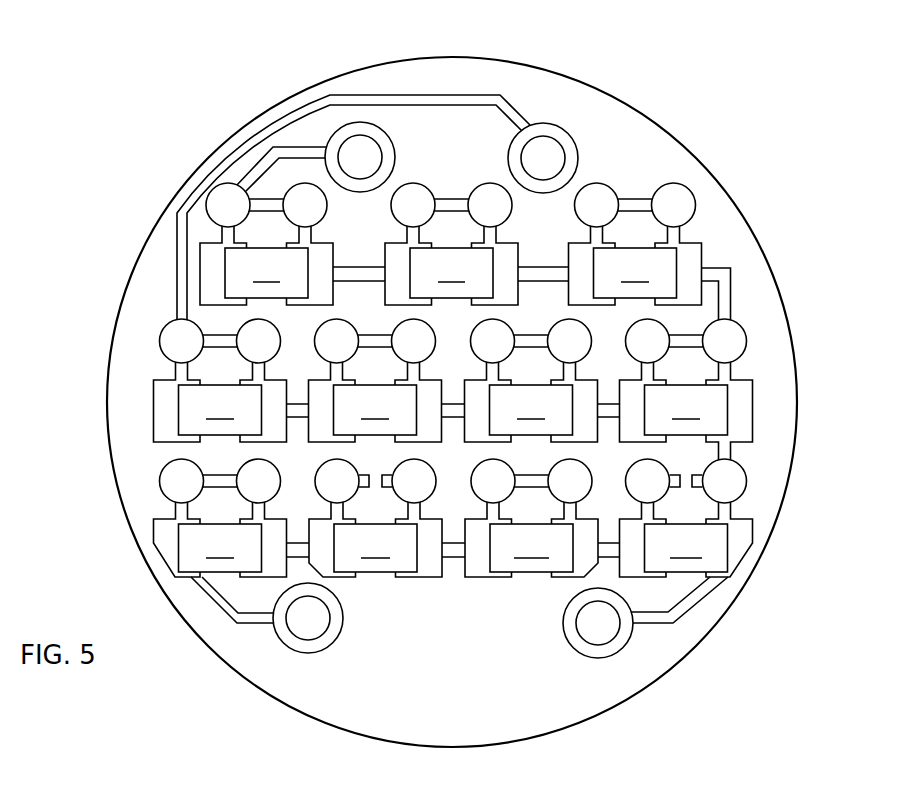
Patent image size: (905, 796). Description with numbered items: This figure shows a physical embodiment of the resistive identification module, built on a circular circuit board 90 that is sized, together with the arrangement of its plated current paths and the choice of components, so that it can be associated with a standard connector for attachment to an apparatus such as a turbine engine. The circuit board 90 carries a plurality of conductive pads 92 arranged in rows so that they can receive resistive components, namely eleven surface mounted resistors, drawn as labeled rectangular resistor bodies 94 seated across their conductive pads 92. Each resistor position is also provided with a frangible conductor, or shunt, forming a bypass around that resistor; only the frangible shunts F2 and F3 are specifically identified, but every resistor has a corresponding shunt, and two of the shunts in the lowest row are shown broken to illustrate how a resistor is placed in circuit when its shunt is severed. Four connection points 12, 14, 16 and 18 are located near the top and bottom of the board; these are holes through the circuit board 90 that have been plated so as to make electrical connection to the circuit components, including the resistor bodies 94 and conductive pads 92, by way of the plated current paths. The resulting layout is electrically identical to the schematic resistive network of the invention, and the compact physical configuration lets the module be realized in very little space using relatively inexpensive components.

The circuit board 90 is at (525, 77).
The connection point 12 is at (340, 123).
The connection point 16 is at (565, 140).
The connection point 14 is at (582, 648).
The connection point 18 is at (298, 648).
The frangible shunt F2 is at (452, 200).
The frangible shunt F3 is at (635, 200).
The conductive pads 92 is at (392, 257).
The resistor element 94 is at (264, 299).